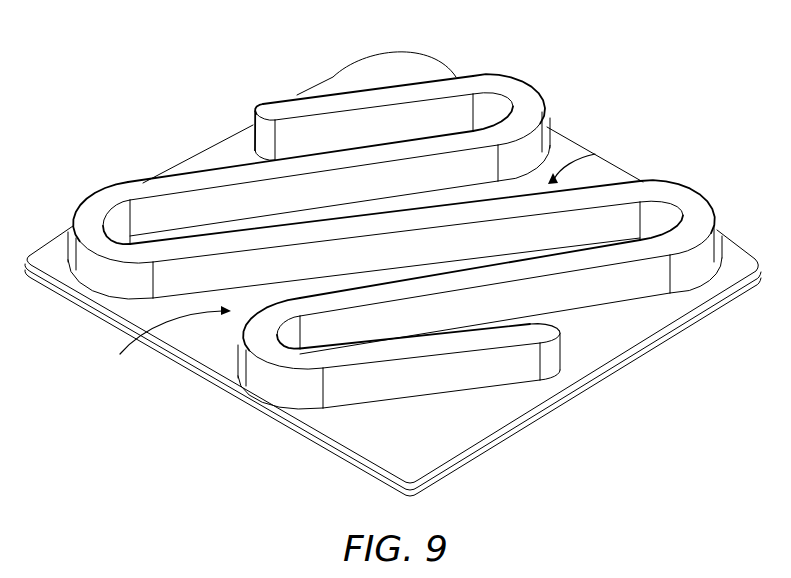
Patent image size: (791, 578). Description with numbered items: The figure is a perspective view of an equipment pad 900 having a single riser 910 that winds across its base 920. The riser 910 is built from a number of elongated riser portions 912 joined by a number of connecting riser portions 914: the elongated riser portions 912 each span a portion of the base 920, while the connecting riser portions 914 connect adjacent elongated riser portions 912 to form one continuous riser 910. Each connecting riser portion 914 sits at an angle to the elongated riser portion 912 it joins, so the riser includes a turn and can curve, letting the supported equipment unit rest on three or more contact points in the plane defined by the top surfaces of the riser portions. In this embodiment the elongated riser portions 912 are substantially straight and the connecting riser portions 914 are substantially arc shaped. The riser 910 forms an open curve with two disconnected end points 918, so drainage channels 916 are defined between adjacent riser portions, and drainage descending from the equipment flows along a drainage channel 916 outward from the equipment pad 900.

The equipment pad 900 is at (66, 65).
The riser 910 is at (75, 188).
The elongated riser portions 912 is at (158, 187).
The connecting riser portions 914 is at (98, 228).
The drainage channels 916 is at (617, 153).
The end points 918 is at (260, 107).
The base 920 is at (483, 412).